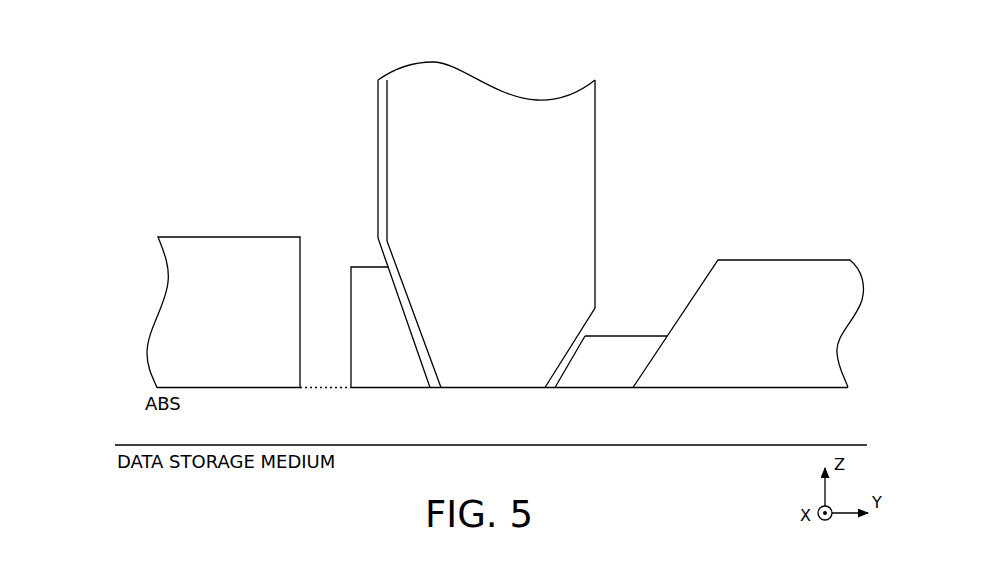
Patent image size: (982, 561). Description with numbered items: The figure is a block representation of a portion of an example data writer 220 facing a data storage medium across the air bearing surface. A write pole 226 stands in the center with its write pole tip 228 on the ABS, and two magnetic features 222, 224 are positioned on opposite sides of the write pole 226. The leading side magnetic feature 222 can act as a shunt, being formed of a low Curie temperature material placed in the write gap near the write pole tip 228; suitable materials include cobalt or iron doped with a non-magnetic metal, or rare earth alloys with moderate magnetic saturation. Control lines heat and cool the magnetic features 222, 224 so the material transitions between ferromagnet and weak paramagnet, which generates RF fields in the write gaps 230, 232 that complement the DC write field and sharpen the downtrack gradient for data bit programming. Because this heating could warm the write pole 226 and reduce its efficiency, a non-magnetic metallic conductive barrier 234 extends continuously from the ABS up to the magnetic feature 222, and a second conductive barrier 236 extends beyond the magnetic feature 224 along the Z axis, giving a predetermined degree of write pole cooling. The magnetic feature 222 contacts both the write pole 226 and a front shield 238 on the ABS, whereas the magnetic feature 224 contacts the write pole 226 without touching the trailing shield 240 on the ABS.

The data writer 220 is at (769, 70).
The magnetic feature 222 is at (620, 371).
The magnetic feature 224 is at (405, 338).
The write pole 226 is at (510, 113).
The write pole tip 228 is at (478, 390).
The write gap 230 is at (632, 316).
The write gap 232 is at (326, 270).
The conductive barrier 234 is at (554, 369).
The conductive barrier 236 is at (376, 169).
The front shield 238 is at (773, 335).
The trailing shield 240 is at (250, 323).